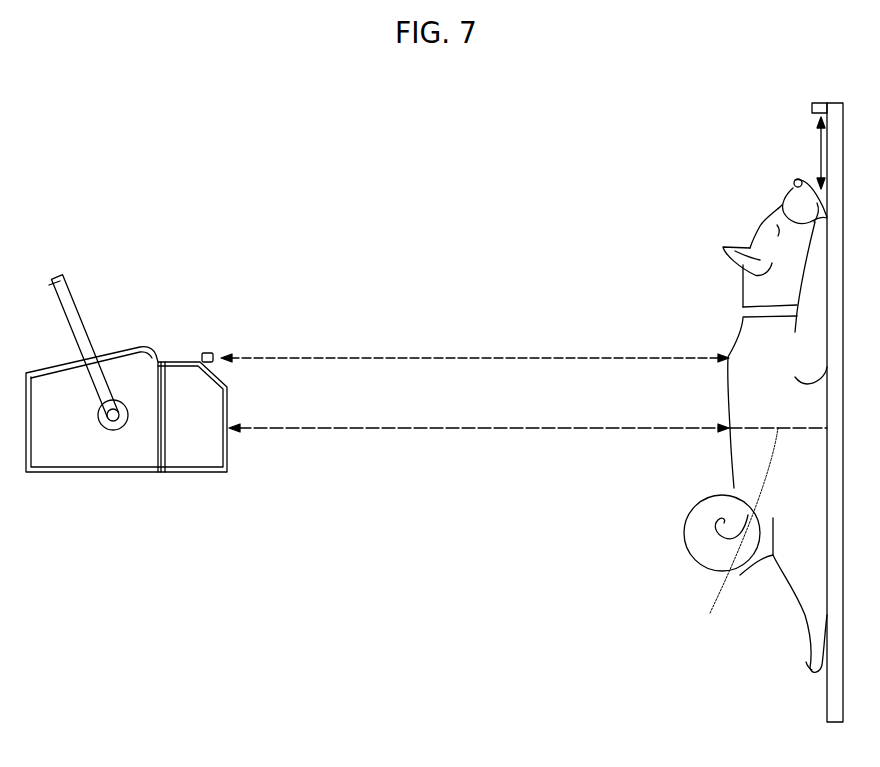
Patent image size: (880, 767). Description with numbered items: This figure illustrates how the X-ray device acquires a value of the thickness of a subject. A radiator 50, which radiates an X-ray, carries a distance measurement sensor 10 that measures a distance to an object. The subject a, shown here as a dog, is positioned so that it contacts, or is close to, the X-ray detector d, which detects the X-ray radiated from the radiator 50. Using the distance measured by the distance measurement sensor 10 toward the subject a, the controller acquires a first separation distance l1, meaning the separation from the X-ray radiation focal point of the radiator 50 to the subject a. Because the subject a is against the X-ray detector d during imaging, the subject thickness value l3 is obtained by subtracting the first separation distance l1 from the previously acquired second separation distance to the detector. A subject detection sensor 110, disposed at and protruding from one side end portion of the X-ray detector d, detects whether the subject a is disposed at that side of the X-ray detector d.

The distance measurement sensor 10 is at (207, 352).
The radiator 50 is at (193, 474).
The subject detection sensor 110 is at (812, 110).
The subject a is at (762, 228).
The X-ray detector d is at (827, 698).
The first separation distance l1 is at (480, 430).
The subject thickness value l3 is at (741, 538).